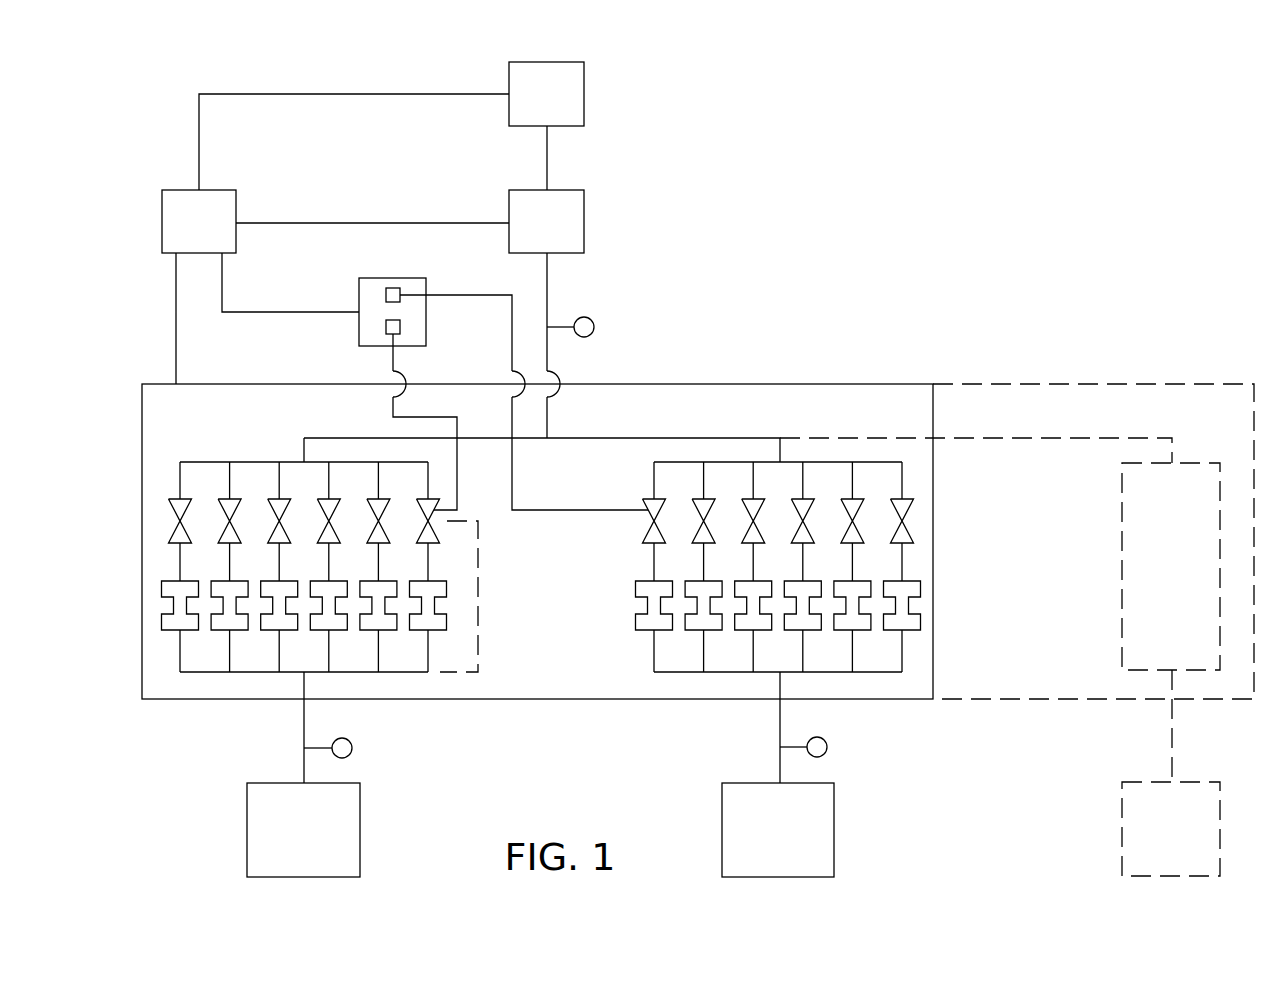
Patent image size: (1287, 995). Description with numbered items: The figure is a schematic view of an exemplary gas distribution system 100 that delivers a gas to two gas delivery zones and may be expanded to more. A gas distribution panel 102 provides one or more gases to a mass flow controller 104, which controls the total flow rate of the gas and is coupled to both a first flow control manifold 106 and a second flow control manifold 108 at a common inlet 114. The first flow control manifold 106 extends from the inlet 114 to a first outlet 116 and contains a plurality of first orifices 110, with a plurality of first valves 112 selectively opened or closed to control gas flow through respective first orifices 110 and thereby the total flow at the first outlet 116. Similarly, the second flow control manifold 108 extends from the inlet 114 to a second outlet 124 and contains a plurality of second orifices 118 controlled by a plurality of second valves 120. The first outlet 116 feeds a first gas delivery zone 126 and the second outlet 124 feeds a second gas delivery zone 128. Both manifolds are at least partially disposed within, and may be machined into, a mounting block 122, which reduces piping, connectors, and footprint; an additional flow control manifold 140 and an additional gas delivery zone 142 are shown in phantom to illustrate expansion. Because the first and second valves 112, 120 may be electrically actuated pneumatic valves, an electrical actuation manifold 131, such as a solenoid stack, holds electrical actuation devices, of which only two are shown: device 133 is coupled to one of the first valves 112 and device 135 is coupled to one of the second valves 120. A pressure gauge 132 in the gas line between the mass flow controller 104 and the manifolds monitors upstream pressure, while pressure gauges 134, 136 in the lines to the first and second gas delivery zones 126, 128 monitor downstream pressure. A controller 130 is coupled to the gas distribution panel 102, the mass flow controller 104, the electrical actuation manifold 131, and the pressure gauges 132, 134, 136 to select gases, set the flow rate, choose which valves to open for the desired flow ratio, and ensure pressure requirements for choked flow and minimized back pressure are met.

The gas distribution system 100 is at (925, 150).
The gas distribution panel 102 is at (529, 107).
The mass flow controller 104 is at (529, 236).
The first flow control manifold 106 is at (260, 567).
The second flow control manifold 108 is at (840, 567).
The first orifices 110 is at (163, 605).
The first valves 112 is at (170, 516).
The inlet 114 is at (298, 455).
The first outlet 116 is at (295, 684).
The second orifices 118 is at (924, 610).
The second valves 120 is at (915, 522).
The mounting block 122 is at (770, 384).
The second outlet 124 is at (771, 684).
The first gas delivery zone 126 is at (286, 843).
The second gas delivery zone 128 is at (760, 843).
The controller 130 is at (181, 236).
The electrical actuation manifold 131 is at (378, 278).
The pressure gauge 132 is at (600, 309).
The electrical actuation device 133 is at (400, 327).
The pressure gauge 134 is at (364, 742).
The electrical actuation device 135 is at (386, 295).
The pressure gauge 136 is at (839, 742).
The additional flow control manifold 140 is at (1154, 581).
The additional gas delivery zone 142 is at (1154, 840).